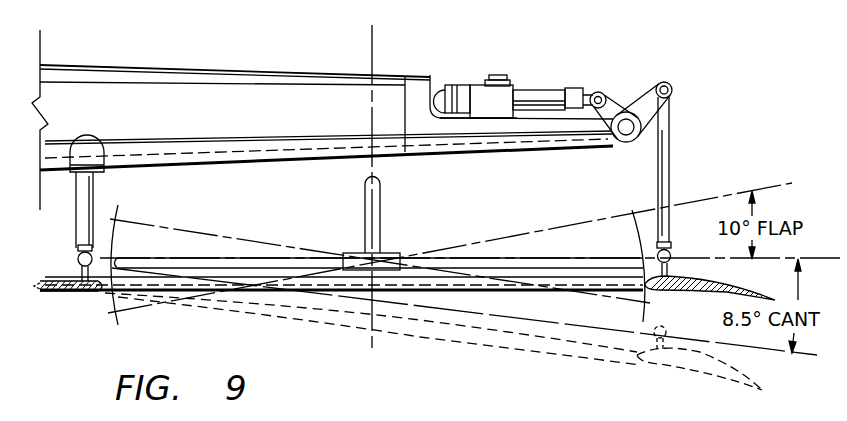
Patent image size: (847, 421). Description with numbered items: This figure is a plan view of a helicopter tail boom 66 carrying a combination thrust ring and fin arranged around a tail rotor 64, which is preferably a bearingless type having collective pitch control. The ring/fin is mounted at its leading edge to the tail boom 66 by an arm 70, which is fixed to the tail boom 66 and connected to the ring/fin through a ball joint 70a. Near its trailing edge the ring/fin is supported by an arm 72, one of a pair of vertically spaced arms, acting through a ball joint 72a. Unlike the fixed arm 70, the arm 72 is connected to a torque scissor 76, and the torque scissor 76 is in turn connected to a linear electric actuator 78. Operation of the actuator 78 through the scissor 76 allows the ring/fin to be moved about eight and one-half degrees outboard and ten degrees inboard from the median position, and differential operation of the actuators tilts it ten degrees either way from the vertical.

The tail rotor 64 is at (240, 262).
The tail boom 66 is at (220, 112).
The arm 70 is at (82, 220).
The ball joint 70a is at (79, 261).
The arm 72 is at (660, 179).
The ball joint 72a is at (669, 256).
The torque scissor 76 is at (647, 103).
The linear electric actuator 78 is at (490, 103).